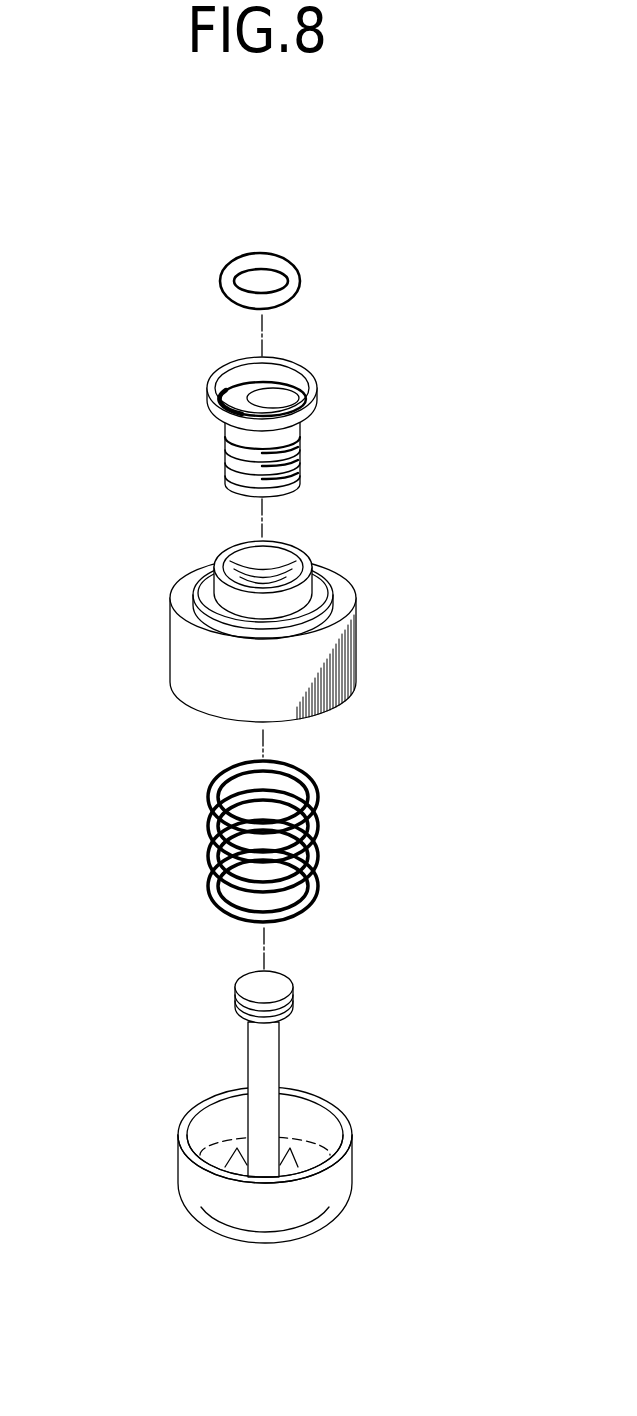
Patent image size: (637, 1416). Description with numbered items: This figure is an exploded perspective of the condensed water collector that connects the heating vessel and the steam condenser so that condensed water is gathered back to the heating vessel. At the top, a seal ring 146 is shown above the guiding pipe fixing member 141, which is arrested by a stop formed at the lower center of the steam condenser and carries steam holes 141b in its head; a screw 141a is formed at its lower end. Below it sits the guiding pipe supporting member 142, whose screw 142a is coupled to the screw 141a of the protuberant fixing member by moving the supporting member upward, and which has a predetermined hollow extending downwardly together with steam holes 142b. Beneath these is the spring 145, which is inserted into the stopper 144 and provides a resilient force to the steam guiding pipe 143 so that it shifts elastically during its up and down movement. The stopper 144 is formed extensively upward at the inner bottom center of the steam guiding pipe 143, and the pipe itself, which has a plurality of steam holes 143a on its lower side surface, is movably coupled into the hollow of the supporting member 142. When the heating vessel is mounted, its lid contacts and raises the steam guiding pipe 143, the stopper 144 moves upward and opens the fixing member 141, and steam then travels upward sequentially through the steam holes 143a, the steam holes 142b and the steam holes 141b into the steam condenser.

The seal ring 146 is at (298, 272).
The guiding pipe fixing member 141 is at (318, 399).
The screw 141a is at (302, 477).
The steam holes 141b is at (270, 400).
The guiding pipe supporting member 142 is at (358, 652).
The screw 142a is at (255, 560).
The steam holes 142b is at (278, 566).
The spring 145 is at (316, 836).
The stopper 144 is at (262, 1048).
The steam guiding pipe 143 is at (333, 1177).
The steam holes 143a is at (230, 1150).